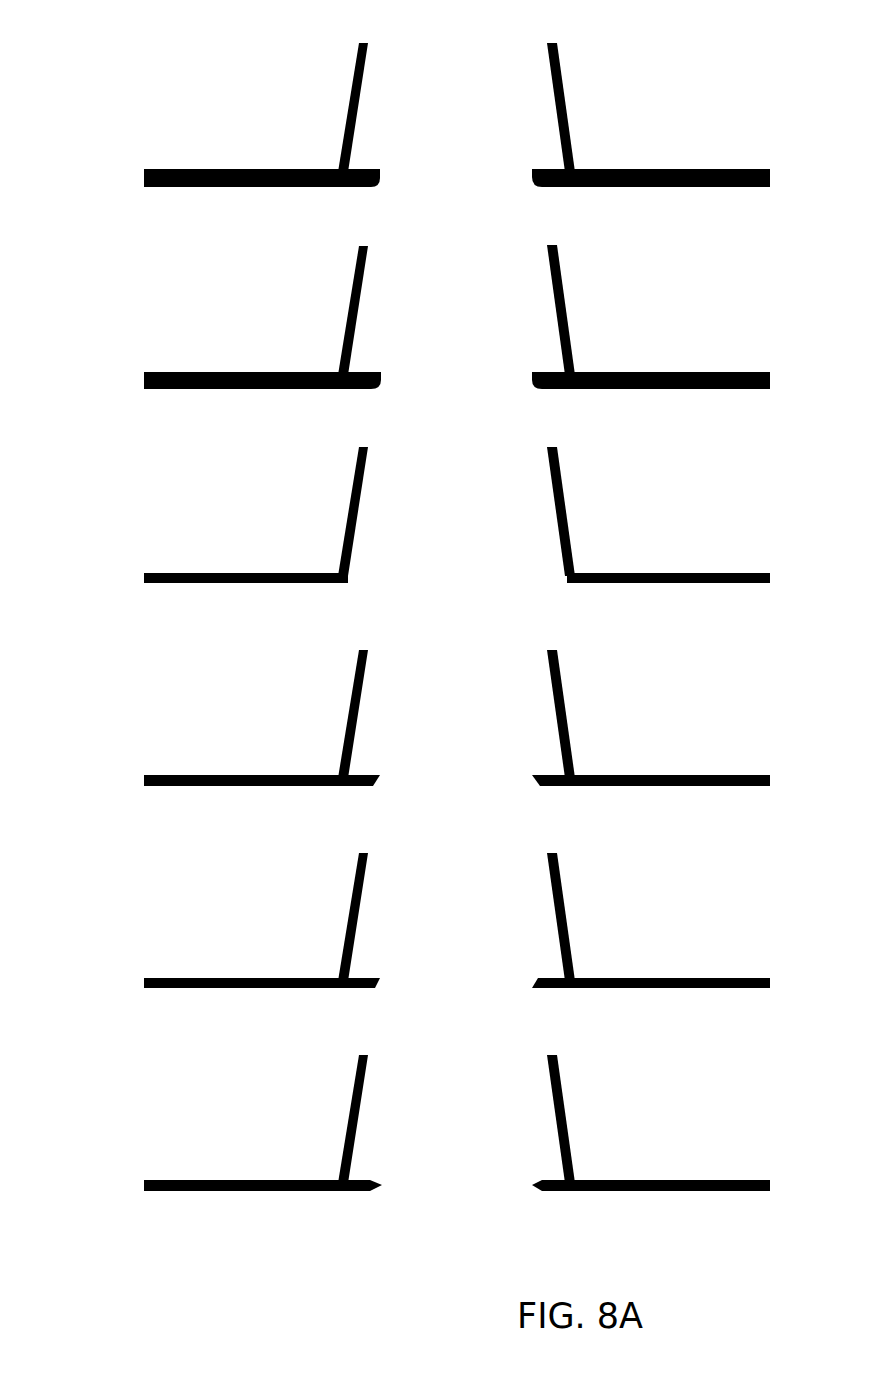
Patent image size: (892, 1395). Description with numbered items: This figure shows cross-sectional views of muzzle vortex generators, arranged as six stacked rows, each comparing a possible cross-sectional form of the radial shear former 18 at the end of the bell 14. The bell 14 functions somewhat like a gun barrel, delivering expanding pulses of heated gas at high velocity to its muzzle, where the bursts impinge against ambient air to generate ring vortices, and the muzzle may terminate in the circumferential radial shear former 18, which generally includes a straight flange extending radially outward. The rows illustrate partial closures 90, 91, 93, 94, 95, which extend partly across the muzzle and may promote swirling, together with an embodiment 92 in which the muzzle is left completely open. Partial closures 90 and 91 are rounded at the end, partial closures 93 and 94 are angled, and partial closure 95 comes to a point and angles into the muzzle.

The bell 14 is at (568, 122).
The radial shear former 18 is at (205, 170).
The partial closure 90 is at (363, 168).
The partial closure 91 is at (369, 373).
The embodiment with open muzzle 92 is at (348, 573).
The partial closure 93 is at (350, 775).
The partial closure 94 is at (360, 977).
The partial closure 95 is at (357, 1178).